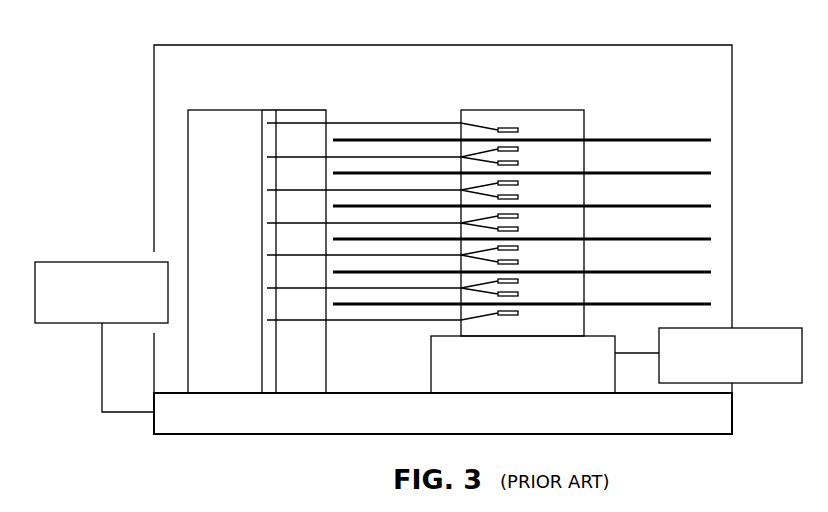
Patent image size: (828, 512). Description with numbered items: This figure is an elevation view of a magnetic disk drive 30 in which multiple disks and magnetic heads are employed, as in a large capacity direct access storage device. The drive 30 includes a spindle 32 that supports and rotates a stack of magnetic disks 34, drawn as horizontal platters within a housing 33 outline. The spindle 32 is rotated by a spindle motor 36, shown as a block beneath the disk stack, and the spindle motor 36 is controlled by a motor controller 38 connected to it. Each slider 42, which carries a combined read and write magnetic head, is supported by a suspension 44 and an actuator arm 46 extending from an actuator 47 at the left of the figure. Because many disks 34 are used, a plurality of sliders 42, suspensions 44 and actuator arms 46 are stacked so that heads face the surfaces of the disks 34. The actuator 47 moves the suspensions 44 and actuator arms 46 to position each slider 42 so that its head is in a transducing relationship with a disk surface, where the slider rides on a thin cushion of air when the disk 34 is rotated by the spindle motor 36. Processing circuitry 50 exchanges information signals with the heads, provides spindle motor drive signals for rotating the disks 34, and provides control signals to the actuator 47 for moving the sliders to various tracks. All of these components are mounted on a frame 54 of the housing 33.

The magnetic disk drive 30 is at (628, 115).
The spindle 32 is at (573, 110).
The housing 33 is at (650, 45).
The magnetic disk 34 is at (709, 142).
The spindle motor 36 is at (512, 375).
The motor controller 38 is at (765, 383).
The slider 42 is at (518, 150).
The suspension 44 is at (490, 157).
The actuator arm 46 is at (434, 157).
The actuator 47 is at (217, 110).
The processing circuitry 50 is at (75, 262).
The frame 54 is at (203, 434).